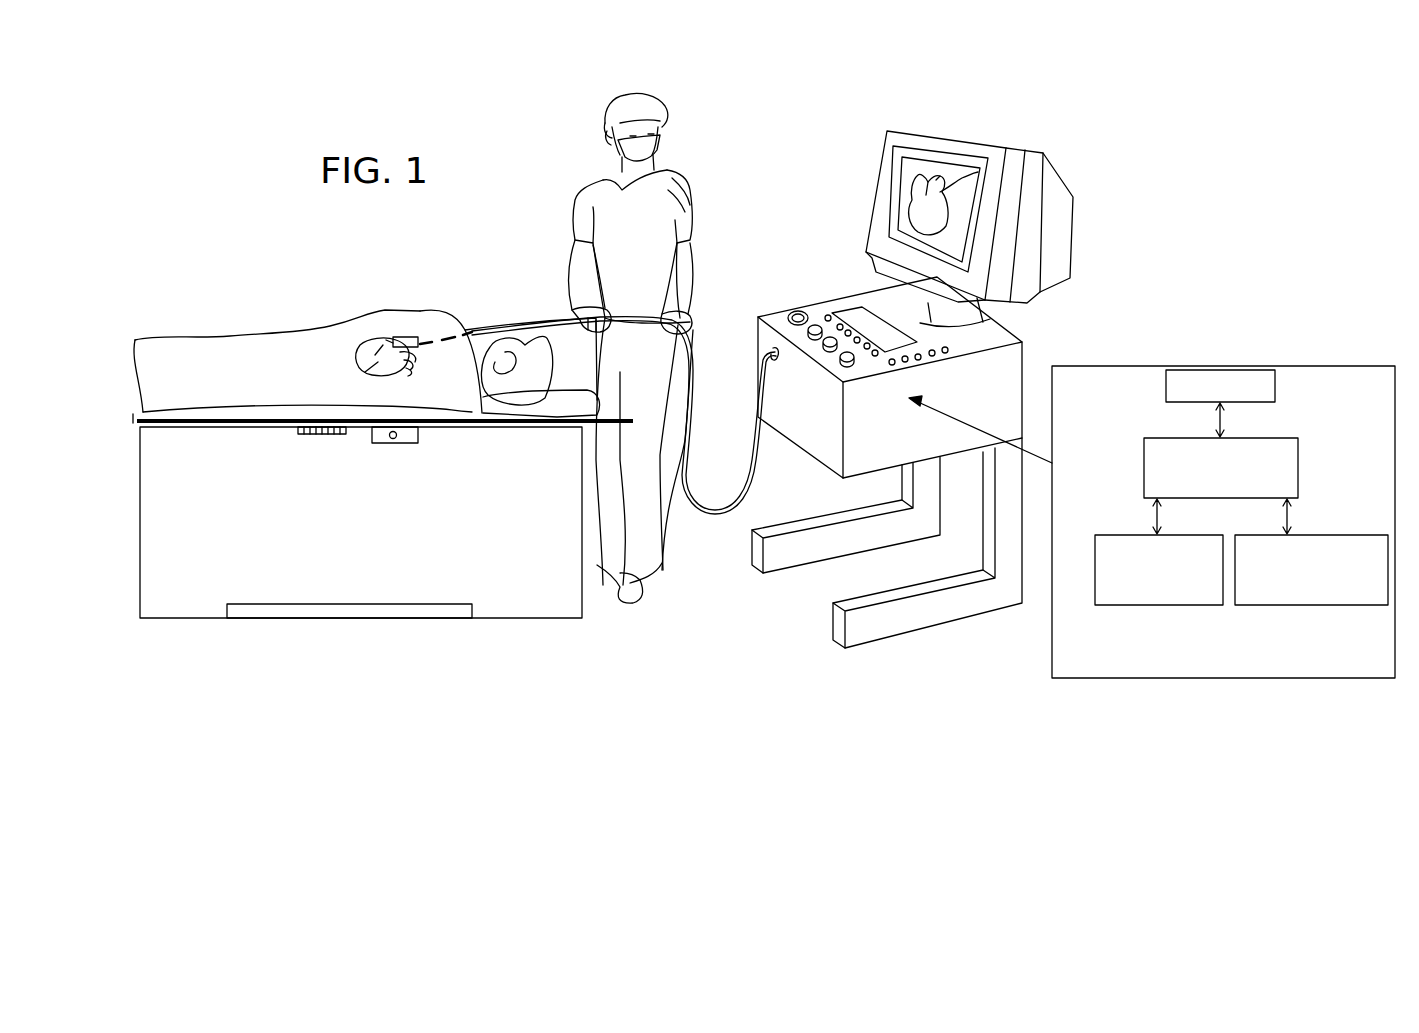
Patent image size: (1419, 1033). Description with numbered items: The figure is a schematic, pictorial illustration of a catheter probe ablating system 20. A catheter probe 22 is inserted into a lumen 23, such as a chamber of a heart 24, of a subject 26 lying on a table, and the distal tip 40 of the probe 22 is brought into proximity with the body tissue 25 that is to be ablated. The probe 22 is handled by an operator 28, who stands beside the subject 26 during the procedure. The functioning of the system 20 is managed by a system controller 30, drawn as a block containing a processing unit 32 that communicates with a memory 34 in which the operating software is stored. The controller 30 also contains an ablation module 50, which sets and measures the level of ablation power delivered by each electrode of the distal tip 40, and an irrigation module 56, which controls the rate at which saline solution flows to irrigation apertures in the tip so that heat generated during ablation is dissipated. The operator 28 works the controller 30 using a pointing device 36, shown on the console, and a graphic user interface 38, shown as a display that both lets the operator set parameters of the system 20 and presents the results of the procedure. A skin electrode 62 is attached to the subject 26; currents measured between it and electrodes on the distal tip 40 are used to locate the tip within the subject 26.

The catheter probe ablating system 20 is at (920, 80).
The catheter probe 22 is at (697, 331).
The lumen 23 is at (340, 288).
The heart 24 is at (385, 340).
The body tissue 25 is at (290, 312).
The subject 26 is at (558, 398).
The operator 28 is at (603, 217).
The system controller 30 is at (1230, 366).
The processing unit 32 is at (1162, 438).
The memory 34 is at (1248, 370).
The pointing device 36 is at (803, 317).
The graphic user interface 38 is at (918, 141).
The distal tip 40 is at (360, 350).
The ablation module 50 is at (1095, 590).
The irrigation module 56 is at (1352, 605).
The skin electrode 62 is at (298, 434).